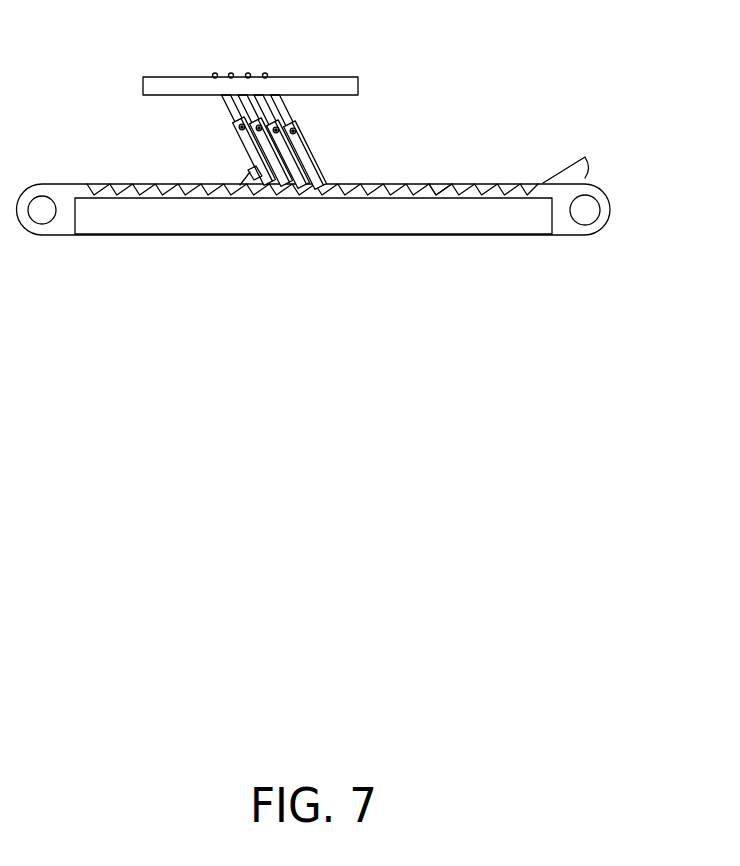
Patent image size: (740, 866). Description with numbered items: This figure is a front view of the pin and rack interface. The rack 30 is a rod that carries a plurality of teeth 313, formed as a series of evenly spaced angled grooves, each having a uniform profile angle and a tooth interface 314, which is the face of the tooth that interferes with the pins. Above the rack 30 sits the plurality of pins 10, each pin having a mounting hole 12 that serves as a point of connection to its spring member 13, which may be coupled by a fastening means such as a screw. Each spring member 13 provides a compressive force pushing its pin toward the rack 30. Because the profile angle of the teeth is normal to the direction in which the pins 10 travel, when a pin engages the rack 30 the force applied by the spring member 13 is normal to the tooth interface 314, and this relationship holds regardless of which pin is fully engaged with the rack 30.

The rack 30 is at (626, 205).
The plurality of teeth 313 is at (478, 175).
The tooth interface 314 is at (437, 186).
The plurality of pins 10 is at (275, 103).
The mounting hole 12 is at (239, 128).
The spring member 13 is at (278, 98).